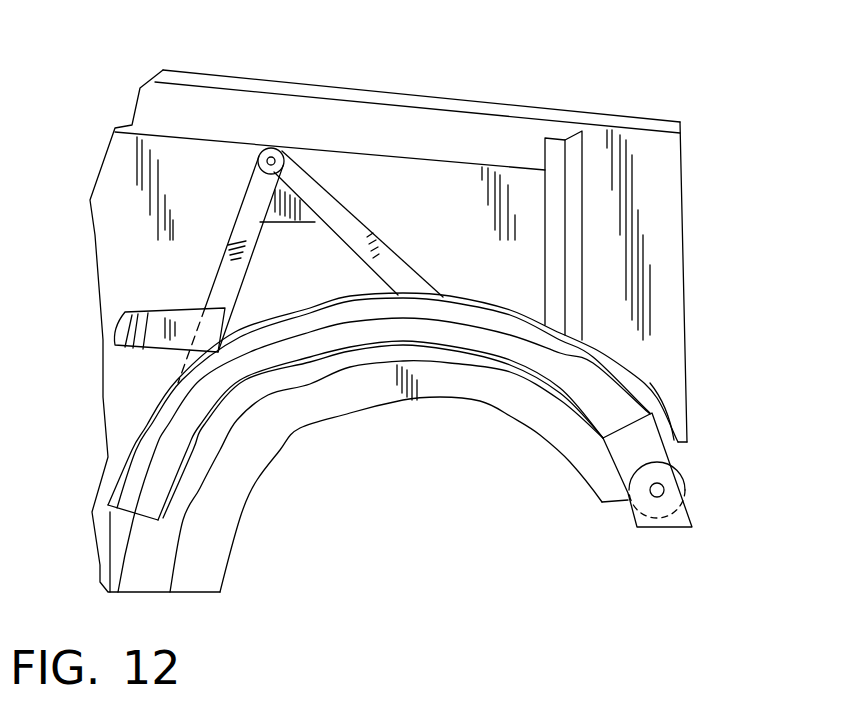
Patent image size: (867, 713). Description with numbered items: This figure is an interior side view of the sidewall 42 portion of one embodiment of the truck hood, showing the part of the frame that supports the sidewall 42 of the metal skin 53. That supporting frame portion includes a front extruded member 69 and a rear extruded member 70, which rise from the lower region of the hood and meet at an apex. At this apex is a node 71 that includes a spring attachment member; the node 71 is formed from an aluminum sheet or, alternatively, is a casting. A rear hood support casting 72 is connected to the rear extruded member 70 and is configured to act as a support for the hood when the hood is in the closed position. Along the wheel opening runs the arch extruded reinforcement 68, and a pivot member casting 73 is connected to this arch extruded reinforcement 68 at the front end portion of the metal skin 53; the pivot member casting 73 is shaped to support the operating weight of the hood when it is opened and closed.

The sidewall 42 is at (667, 337).
The metal skin 53 is at (716, 174).
The arch extruded reinforcement 68 is at (327, 412).
The front extruded member 69 is at (355, 231).
The rear extruded member 70 is at (223, 267).
The node 71 is at (268, 150).
The rear hood support casting 72 is at (177, 347).
The pivot member casting 73 is at (670, 483).